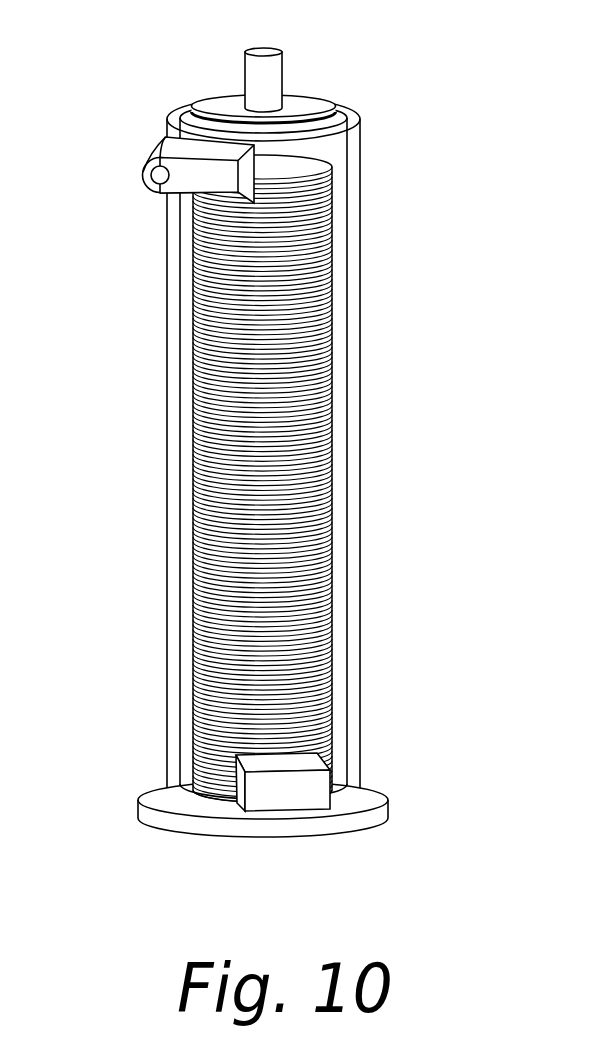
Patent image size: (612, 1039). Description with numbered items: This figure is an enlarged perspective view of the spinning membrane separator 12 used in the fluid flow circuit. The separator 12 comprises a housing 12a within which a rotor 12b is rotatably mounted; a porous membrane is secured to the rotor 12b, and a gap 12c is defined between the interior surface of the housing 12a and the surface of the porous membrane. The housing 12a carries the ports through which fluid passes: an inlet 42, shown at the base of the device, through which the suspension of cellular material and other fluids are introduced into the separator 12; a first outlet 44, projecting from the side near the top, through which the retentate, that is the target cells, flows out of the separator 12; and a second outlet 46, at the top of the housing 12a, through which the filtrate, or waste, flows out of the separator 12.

The spinning membrane separator 12 is at (244, 448).
The housing 12a is at (167, 648).
The rotor 12b is at (180, 471).
The gap 12c is at (190, 565).
The inlet 42 is at (330, 803).
The first outlet 44 is at (143, 175).
The second outlet 46 is at (283, 66).